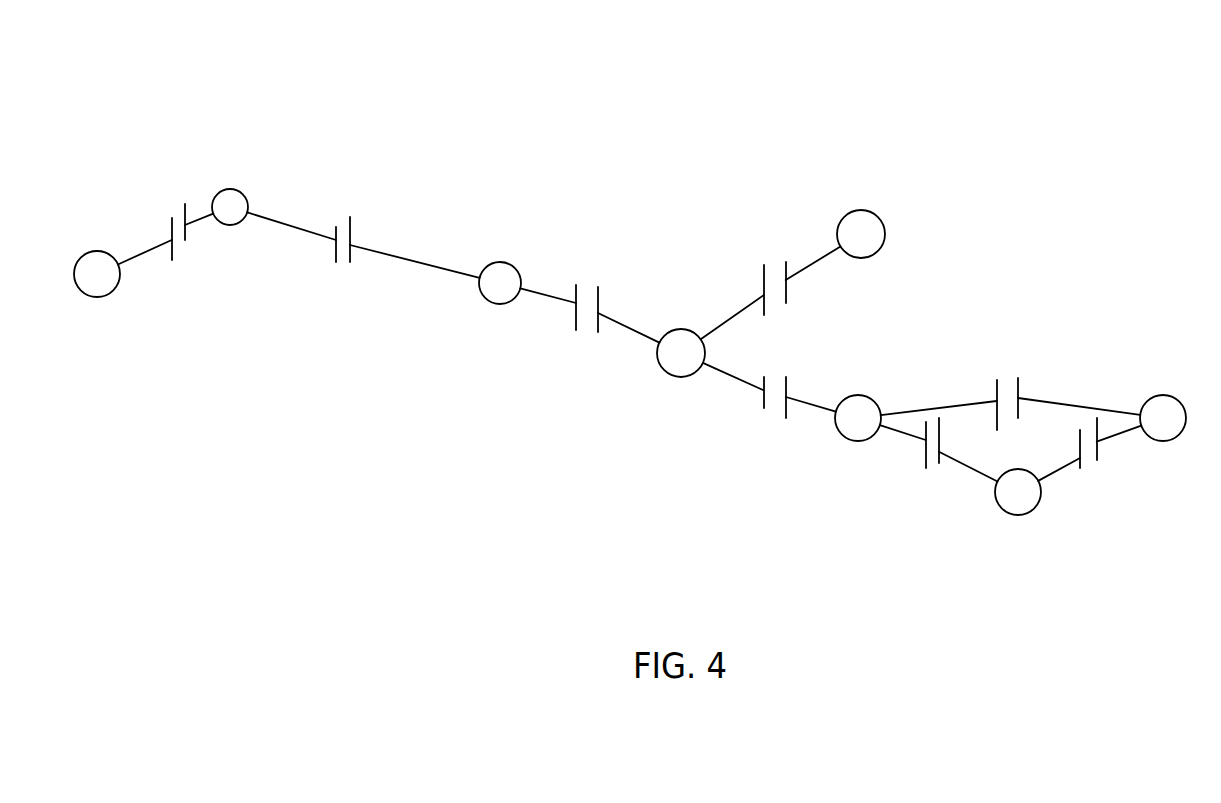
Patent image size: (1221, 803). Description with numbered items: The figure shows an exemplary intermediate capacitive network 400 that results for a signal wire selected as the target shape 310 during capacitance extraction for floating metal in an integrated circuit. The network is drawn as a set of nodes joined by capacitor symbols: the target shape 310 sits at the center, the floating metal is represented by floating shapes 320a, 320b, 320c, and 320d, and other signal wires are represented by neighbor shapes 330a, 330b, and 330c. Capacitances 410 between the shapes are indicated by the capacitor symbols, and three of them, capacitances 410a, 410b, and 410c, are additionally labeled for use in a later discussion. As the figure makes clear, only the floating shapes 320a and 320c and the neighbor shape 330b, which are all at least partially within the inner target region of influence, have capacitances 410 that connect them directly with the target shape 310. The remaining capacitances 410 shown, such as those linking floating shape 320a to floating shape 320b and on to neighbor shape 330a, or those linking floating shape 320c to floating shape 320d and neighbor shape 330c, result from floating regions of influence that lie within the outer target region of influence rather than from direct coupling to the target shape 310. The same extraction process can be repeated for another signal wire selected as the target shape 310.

The intermediate capacitive network 400 is at (1116, 114).
The target shape 310 is at (688, 377).
The floating shape 320a is at (490, 264).
The floating shape 320b is at (228, 188).
The floating shape 320c is at (872, 442).
The floating shape 320d is at (1030, 517).
The neighbor shape 330a is at (74, 272).
The neighbor shape 330b is at (897, 203).
The neighbor shape 330c is at (1170, 394).
The capacitance 410 is at (366, 279).
The capacitance 410a is at (614, 281).
The capacitance 410b is at (364, 222).
The capacitance 410c is at (171, 216).